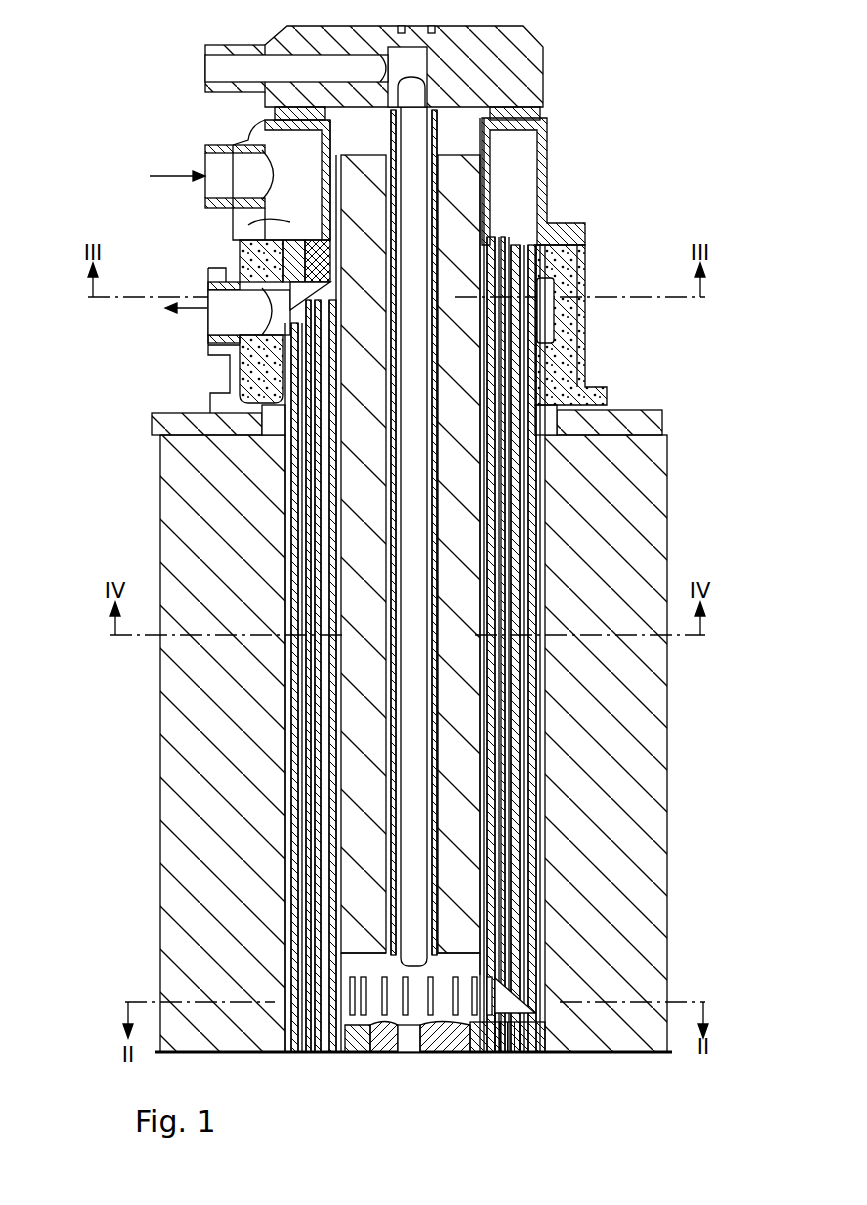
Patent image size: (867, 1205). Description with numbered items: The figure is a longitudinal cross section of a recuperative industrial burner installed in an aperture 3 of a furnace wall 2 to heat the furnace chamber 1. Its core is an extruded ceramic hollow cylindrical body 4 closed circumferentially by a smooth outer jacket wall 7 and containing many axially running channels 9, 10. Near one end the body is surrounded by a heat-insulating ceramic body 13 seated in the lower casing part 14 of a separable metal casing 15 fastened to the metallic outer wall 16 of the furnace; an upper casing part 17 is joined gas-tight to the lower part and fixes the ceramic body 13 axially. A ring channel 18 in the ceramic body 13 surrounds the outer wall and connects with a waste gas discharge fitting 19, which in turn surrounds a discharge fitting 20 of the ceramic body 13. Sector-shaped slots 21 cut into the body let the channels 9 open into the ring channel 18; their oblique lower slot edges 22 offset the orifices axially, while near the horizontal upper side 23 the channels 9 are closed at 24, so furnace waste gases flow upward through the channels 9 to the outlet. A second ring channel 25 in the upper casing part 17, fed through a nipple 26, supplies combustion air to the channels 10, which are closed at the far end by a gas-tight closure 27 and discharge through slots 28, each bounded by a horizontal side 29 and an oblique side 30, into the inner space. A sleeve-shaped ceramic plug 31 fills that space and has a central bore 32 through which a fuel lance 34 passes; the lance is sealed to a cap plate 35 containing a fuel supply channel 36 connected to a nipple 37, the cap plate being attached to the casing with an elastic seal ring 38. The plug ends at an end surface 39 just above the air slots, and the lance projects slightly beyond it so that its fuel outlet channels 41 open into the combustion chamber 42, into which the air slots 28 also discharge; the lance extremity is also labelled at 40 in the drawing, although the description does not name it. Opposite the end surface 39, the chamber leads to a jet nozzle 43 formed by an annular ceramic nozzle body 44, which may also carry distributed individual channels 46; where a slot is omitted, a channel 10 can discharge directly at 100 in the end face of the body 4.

The furnace chamber 1 is at (603, 1147).
The wall 2 is at (620, 725).
The aperture 3 is at (290, 657).
The hollow cylindrical body 4 is at (290, 790).
The outer jacket wall 7 is at (545, 643).
The channels 9 is at (300, 480).
The channels 10 is at (510, 240).
The ceramic body 13 is at (240, 262).
The lower casing part 14 is at (215, 372).
The metal casing 15 is at (588, 362).
The metallic outer wall 16 is at (620, 412).
The upper casing part 17 is at (540, 228).
The ring channel 18 is at (548, 308).
The waste gas discharge fitting 19 is at (250, 362).
The discharge fitting 20 is at (210, 312).
The slots 21 is at (253, 311).
The lower slot edges 22 is at (328, 300).
The upper side 23 is at (330, 272).
The closure 24 is at (290, 212).
The second ring channel 25 is at (300, 145).
The nipple 26 is at (200, 152).
The gas-tight closure 27 is at (530, 1056).
The slots 28 is at (372, 985).
The side 29 is at (506, 1056).
The oblique side 30 is at (505, 1000).
The ceramic plug 31 is at (470, 770).
The central bore 32 is at (440, 590).
The fuel lance 34 is at (420, 527).
The cap plate 35 is at (520, 62).
The fuel supply channel 36 is at (250, 72).
The nipple 37 is at (255, 43).
The elastic seal ring 38 is at (290, 112).
The end surface 39 is at (345, 930).
The needle tip 40 is at (417, 958).
The fuel outlet channels 41 is at (421, 973).
The combustion chamber 42 is at (355, 1054).
The jet nozzle 43 is at (388, 1056).
The nozzle body 44 is at (448, 1056).
The individual channels 46 is at (478, 1056).
The discharge location 100 is at (423, 1056).